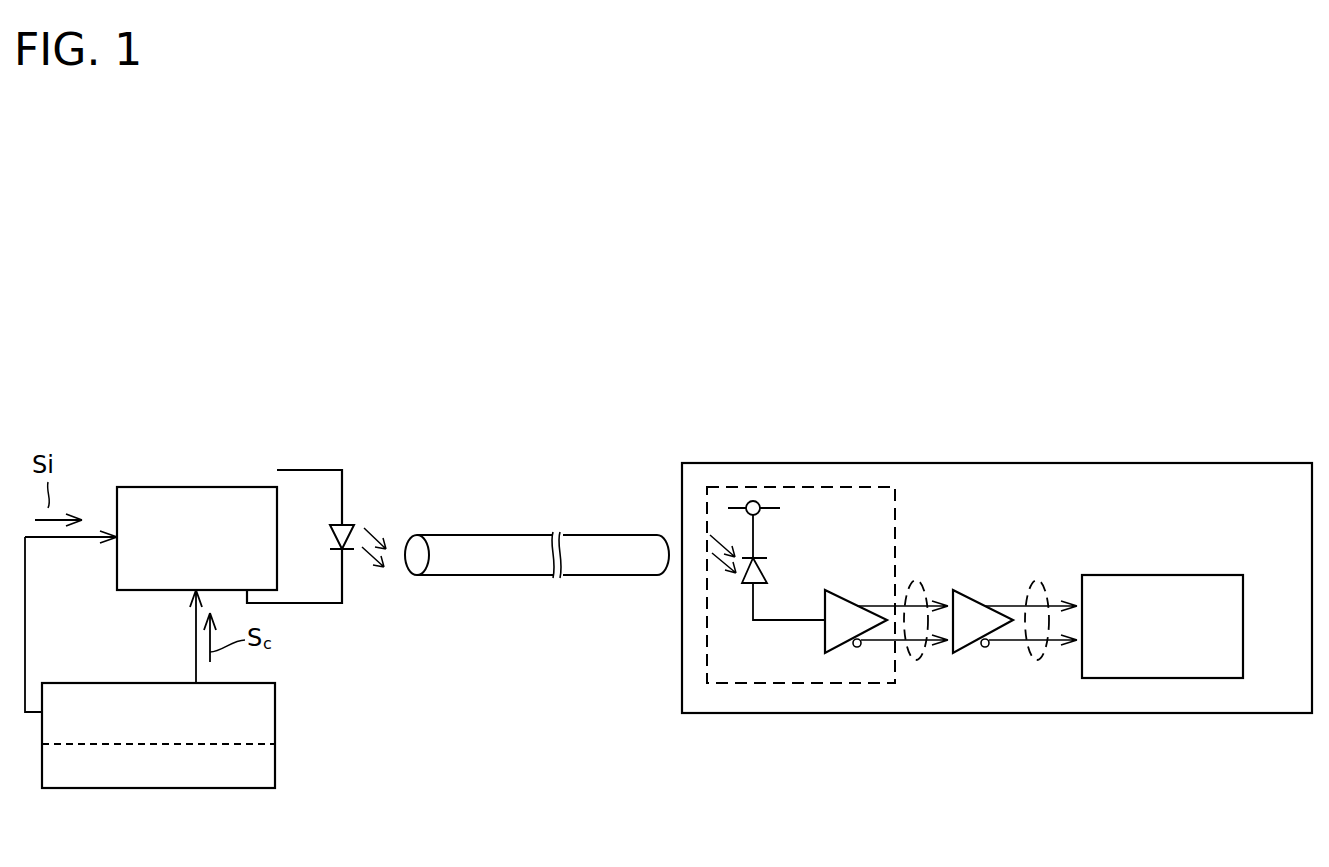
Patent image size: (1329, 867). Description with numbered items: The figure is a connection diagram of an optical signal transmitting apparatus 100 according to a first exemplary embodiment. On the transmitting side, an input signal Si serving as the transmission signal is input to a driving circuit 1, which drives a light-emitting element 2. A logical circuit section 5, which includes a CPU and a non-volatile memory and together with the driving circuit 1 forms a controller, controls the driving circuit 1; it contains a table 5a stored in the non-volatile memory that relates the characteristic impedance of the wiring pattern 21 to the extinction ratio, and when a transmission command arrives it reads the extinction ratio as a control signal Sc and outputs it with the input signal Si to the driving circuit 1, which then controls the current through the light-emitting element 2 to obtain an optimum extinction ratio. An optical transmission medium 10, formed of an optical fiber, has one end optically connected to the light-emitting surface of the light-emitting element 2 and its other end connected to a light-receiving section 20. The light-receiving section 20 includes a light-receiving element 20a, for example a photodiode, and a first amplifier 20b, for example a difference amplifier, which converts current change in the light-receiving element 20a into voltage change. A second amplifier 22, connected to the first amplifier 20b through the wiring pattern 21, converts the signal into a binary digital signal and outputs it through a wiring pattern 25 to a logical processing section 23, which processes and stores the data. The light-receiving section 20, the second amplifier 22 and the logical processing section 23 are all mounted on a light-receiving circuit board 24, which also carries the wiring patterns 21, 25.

The optical signal transmitting apparatus 100 is at (518, 340).
The driving circuit 1 is at (179, 487).
The light-emitting element 2 is at (348, 527).
The logical circuit section 5 is at (275, 718).
The table 5a is at (186, 788).
The optical transmission medium 10 is at (527, 543).
The light-receiving section 20 is at (783, 486).
The light-receiving element 20a is at (750, 584).
The first amplifier 20b is at (845, 632).
The wiring pattern 21 is at (918, 587).
The second amplifier 22 is at (962, 652).
The logical processing section 23 is at (1115, 575).
The light-receiving circuit board 24 is at (1196, 463).
The wiring pattern 25 is at (1035, 660).